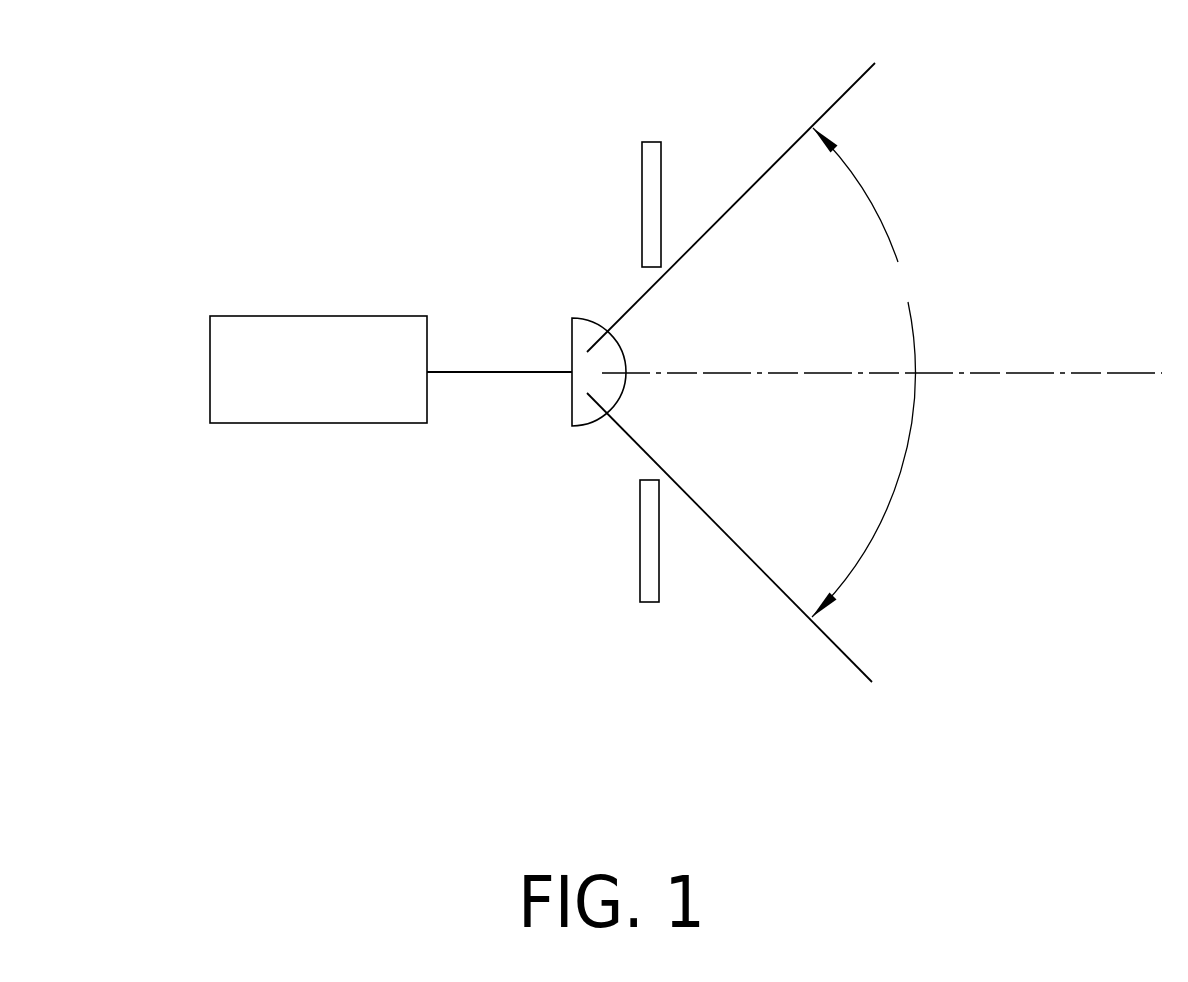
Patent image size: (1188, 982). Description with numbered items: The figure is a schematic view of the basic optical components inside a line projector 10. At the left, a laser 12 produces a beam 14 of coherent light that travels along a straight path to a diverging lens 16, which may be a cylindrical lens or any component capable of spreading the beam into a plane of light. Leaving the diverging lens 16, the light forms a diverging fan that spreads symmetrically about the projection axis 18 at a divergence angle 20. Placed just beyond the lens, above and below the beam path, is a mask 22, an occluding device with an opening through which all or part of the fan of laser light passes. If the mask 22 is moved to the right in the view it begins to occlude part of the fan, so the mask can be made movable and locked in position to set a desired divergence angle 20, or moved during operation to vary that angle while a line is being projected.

The line projector 10 is at (669, 373).
The laser 12 is at (302, 434).
The beam 14 is at (426, 488).
The diverging lens 16 is at (507, 483).
The projection axis 18 is at (882, 319).
The divergence angle 20 is at (866, 372).
The mask 22 is at (578, 400).